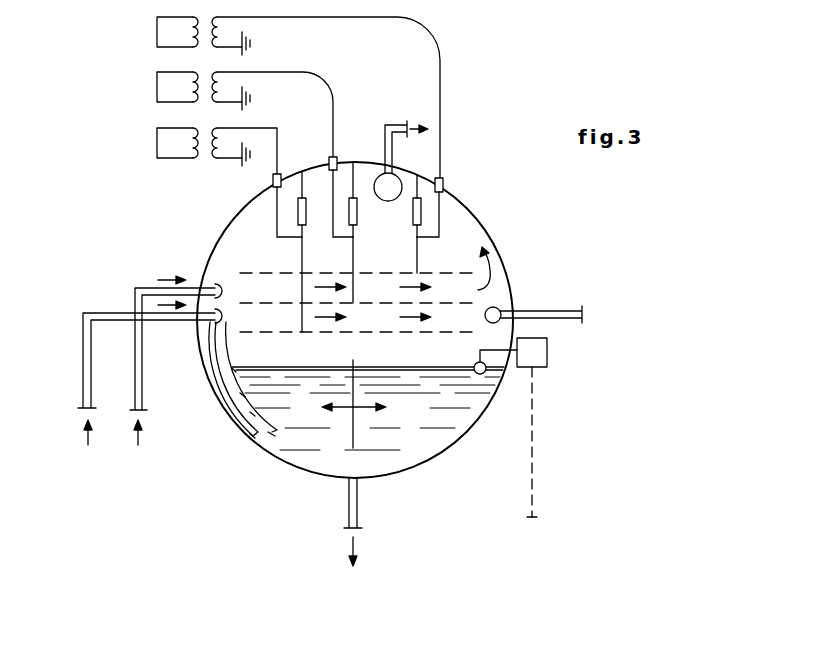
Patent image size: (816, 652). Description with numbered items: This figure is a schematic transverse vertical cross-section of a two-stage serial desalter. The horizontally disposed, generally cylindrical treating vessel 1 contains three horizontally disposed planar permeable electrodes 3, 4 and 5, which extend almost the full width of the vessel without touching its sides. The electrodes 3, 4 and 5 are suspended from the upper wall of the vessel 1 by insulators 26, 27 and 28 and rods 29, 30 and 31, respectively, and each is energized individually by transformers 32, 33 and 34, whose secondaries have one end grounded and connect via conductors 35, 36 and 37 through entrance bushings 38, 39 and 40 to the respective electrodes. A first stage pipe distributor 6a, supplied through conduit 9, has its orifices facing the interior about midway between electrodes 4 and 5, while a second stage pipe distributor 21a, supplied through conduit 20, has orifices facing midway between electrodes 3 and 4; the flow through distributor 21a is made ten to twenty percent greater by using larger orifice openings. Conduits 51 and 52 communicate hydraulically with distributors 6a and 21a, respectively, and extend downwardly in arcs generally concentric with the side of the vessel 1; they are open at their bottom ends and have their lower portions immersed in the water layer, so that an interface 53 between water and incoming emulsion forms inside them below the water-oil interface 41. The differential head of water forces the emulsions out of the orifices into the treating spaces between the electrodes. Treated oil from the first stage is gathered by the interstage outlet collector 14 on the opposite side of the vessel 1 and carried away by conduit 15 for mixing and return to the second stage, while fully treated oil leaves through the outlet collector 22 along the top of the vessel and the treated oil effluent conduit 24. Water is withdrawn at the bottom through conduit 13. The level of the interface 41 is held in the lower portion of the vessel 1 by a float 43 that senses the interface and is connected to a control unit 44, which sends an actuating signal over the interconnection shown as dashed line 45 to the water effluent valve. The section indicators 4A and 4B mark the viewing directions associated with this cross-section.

The vessel 1 is at (485, 222).
The electrode 3 is at (278, 273).
The electrode 4 is at (278, 303).
The electrode 5 is at (278, 333).
The section direction A 4A is at (322, 409).
The section direction B 4B is at (387, 409).
The pipe distributor 6a is at (215, 326).
The conduit 9 is at (78, 407).
The conduit 13 is at (358, 505).
The interstage outlet collector 14 is at (499, 308).
The conduit 15 is at (558, 311).
The conduit 20 is at (147, 410).
The pipe distributor 21a is at (214, 282).
The outlet collector 22 is at (398, 176).
The treated oil effluent conduit 24 is at (392, 124).
The insulator 26 is at (412, 214).
The insulator 27 is at (354, 170).
The insulator 28 is at (304, 177).
The rod 29 is at (419, 254).
The rod 30 is at (355, 254).
The rod 31 is at (305, 254).
The transformer 32 is at (228, 27).
The transformer 33 is at (230, 82).
The transformer 34 is at (228, 136).
The conductor 35 is at (423, 31).
The conductor 36 is at (326, 84).
The conductor 37 is at (272, 178).
The entrance bushing 38 is at (444, 182).
The entrance bushing 39 is at (336, 156).
The entrance bushing 40 is at (282, 172).
The interface 41 is at (278, 366).
The float 43 is at (484, 373).
The control unit 44 is at (547, 353).
The dashed line 45 is at (532, 440).
The conduit 51 is at (270, 434).
The conduit 52 is at (248, 432).
The interface 53 is at (240, 395).